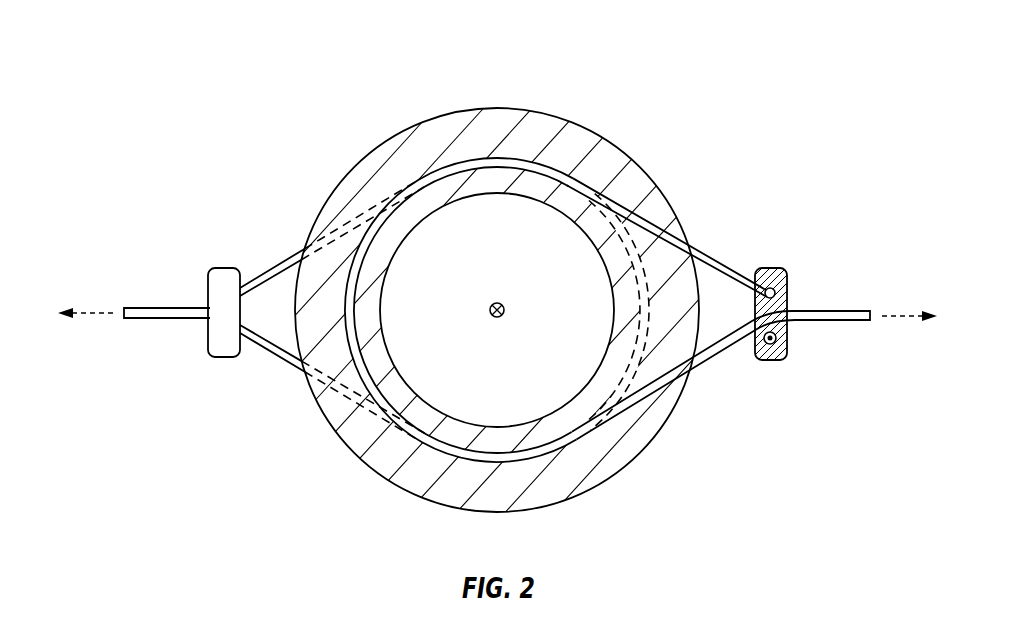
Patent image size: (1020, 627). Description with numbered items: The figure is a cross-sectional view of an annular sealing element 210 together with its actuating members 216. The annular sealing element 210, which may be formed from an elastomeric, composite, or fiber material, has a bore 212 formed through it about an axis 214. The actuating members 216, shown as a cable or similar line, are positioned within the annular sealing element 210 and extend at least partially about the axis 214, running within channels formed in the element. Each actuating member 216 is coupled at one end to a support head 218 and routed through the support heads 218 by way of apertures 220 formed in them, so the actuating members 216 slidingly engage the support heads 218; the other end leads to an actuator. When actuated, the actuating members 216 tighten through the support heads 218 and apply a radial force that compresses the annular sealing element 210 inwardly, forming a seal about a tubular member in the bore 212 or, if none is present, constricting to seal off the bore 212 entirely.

The annular sealing element 210 is at (590, 130).
The bore 212 is at (413, 229).
The axis 214 is at (504, 304).
The actuating member 216 is at (278, 256).
The support head 218 is at (222, 358).
The aperture 220 is at (790, 292).